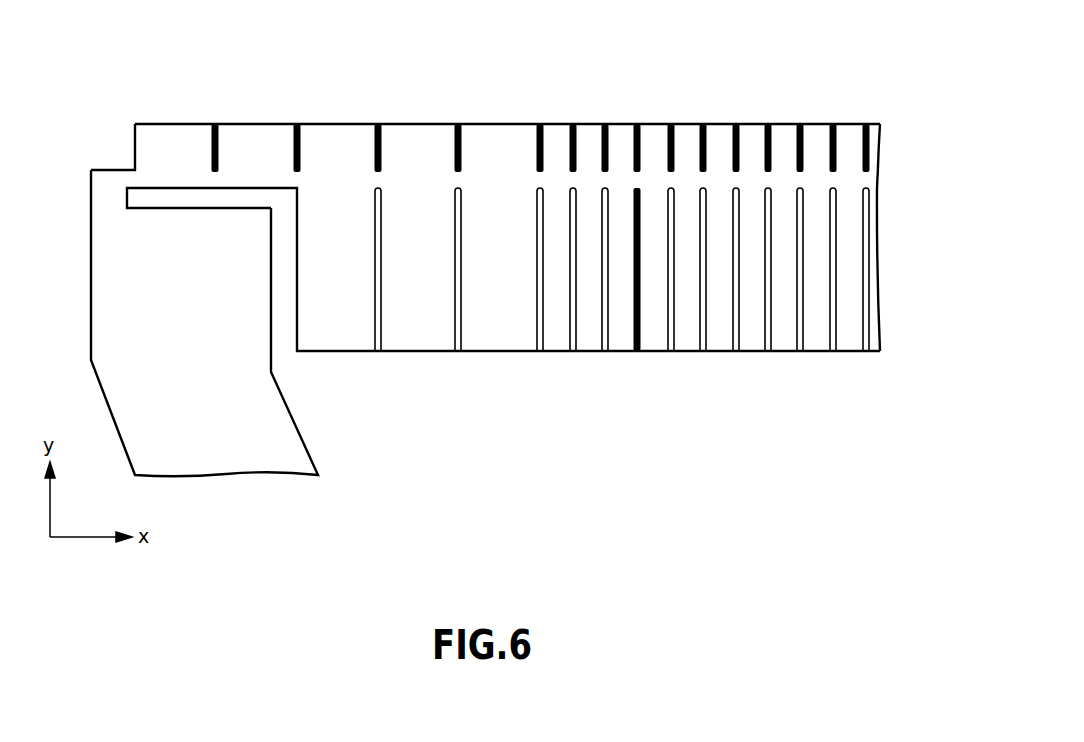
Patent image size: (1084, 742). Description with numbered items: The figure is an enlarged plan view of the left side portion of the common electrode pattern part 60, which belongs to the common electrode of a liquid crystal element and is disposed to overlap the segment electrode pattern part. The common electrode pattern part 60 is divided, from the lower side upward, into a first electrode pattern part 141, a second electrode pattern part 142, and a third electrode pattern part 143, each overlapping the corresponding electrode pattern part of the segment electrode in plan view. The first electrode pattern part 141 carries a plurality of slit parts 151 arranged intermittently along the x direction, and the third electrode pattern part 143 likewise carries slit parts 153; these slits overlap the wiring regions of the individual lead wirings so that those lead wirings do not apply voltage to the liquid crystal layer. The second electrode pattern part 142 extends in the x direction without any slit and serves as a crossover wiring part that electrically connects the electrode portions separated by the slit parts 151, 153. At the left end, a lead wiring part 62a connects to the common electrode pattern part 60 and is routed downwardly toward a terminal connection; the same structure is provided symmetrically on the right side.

The common electrode pattern part 60 is at (488, 593).
The lead wiring part 62a is at (236, 437).
The first electrode pattern part 141 is at (884, 278).
The second electrode pattern part 142 is at (884, 183).
The third electrode pattern part 143 is at (884, 139).
The slit parts 151 is at (458, 352).
The slit parts 153 is at (378, 124).